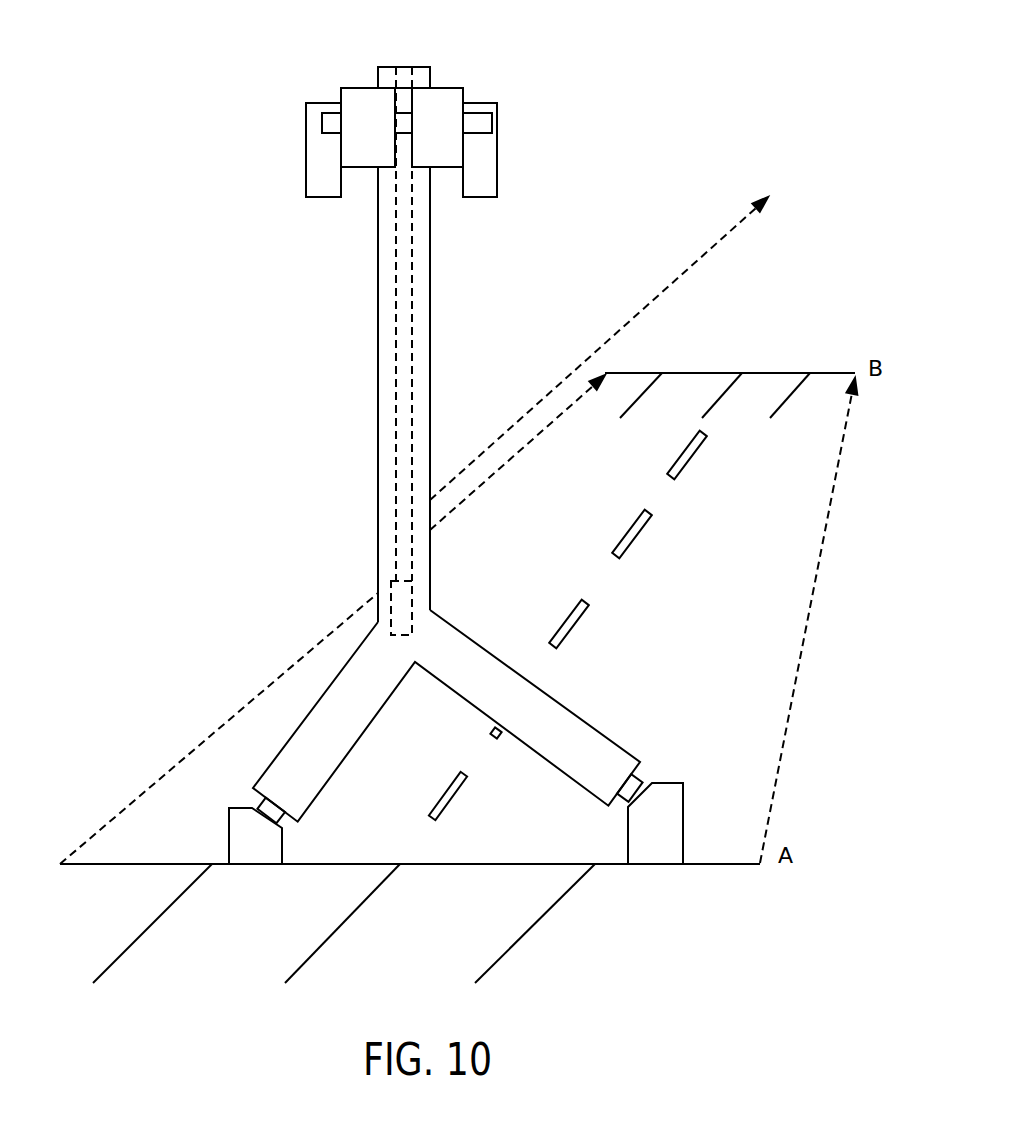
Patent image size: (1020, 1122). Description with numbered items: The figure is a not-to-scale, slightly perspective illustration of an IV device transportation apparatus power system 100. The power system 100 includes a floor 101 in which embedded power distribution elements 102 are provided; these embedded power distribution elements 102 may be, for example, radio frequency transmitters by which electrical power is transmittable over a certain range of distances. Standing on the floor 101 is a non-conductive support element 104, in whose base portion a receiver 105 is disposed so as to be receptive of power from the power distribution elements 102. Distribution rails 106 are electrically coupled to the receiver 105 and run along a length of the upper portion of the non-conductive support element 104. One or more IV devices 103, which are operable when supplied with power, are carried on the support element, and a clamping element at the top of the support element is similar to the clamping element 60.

The power system 100 is at (259, 77).
The clamping element 60 is at (437, 88).
The floor 101 is at (134, 865).
The embedded power distribution elements 102 is at (572, 628).
The IV devices 103 is at (313, 183).
The non-conductive support element 104 is at (378, 338).
The receiver 105 is at (390, 603).
The distribution rails 106 is at (412, 480).